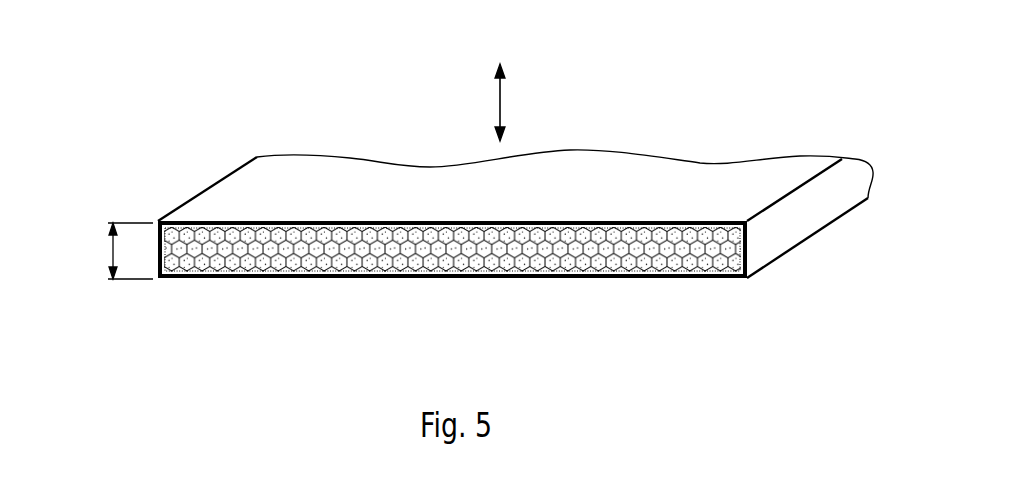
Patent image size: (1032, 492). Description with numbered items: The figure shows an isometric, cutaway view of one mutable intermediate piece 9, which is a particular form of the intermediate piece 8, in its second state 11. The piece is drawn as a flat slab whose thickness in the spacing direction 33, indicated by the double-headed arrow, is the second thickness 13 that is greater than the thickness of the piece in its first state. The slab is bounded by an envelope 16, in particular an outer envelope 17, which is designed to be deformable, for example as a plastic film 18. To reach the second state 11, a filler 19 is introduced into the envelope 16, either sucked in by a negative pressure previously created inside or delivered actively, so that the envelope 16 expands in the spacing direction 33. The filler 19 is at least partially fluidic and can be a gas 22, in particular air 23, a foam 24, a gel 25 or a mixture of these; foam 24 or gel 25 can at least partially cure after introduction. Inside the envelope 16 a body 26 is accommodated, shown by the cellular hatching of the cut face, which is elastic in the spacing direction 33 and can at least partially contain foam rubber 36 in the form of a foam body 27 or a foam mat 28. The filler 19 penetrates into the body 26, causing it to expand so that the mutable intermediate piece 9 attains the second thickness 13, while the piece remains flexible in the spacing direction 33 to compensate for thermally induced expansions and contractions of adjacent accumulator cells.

The intermediate piece 8 is at (530, 172).
The mutable intermediate piece 9 is at (530, 172).
The second state 11 is at (530, 172).
The second thickness 13 is at (109, 252).
The envelope 16 is at (515, 156).
The outer envelope 17 is at (515, 156).
The plastic film 18 is at (590, 167).
The filler 19 is at (452, 283).
The gas 22 is at (452, 283).
The air 23 is at (452, 283).
The foam 24 is at (452, 283).
The gel 25 is at (452, 283).
The body 26 is at (452, 283).
The foam body 27 is at (452, 283).
The foam mat 28 is at (452, 283).
The foam rubber 36 is at (578, 278).
The spacing direction 33 is at (497, 103).